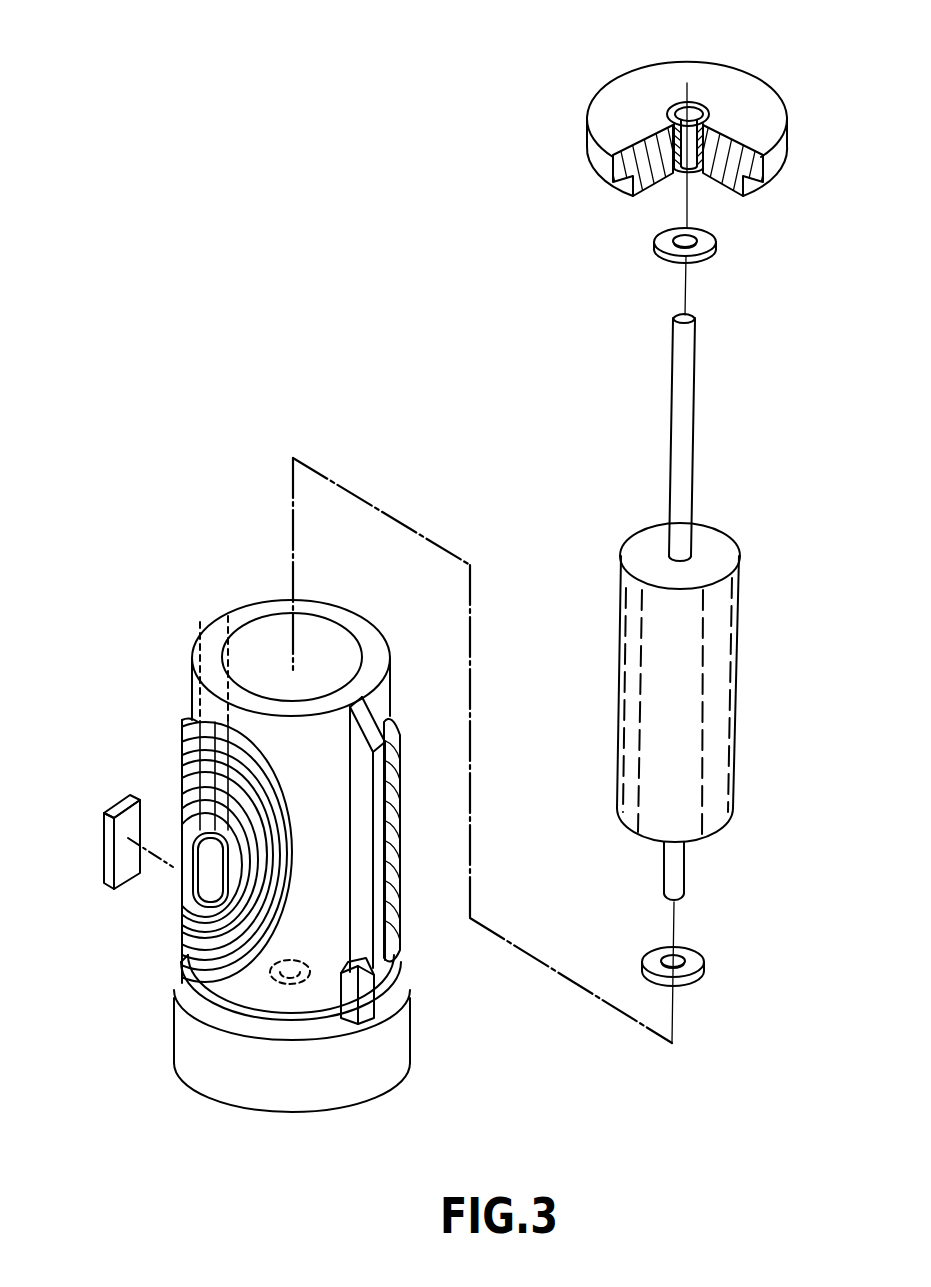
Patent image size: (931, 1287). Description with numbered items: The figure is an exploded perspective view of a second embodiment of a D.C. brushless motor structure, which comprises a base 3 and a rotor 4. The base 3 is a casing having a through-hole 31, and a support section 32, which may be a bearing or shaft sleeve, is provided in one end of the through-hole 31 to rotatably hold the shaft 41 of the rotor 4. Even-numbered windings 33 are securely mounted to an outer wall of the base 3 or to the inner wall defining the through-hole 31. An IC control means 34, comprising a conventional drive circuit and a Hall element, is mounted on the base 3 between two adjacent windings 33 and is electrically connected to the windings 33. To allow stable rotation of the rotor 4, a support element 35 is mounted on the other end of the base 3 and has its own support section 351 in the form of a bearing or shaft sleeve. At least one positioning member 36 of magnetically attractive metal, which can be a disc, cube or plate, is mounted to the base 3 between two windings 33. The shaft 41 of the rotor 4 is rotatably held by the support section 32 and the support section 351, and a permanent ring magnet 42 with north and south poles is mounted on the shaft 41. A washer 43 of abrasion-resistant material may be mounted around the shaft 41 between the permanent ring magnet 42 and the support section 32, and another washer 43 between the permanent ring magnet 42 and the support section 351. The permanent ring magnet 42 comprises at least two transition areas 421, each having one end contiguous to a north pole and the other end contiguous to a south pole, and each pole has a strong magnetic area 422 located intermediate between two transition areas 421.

The base 3 is at (335, 618).
The through-hole 31 is at (267, 635).
The support section 32 is at (288, 985).
The windings 33 is at (393, 770).
The IC control means 34 is at (360, 992).
The support element 35 is at (755, 97).
The support section 351 is at (673, 107).
The positioning member 36 is at (120, 803).
The rotor 4 is at (762, 500).
The shaft 41 is at (677, 468).
The permanent ring magnet 42 is at (672, 661).
The transition area 421 is at (628, 735).
The strong magnetic area 422 is at (722, 716).
The washer 43 is at (716, 244).